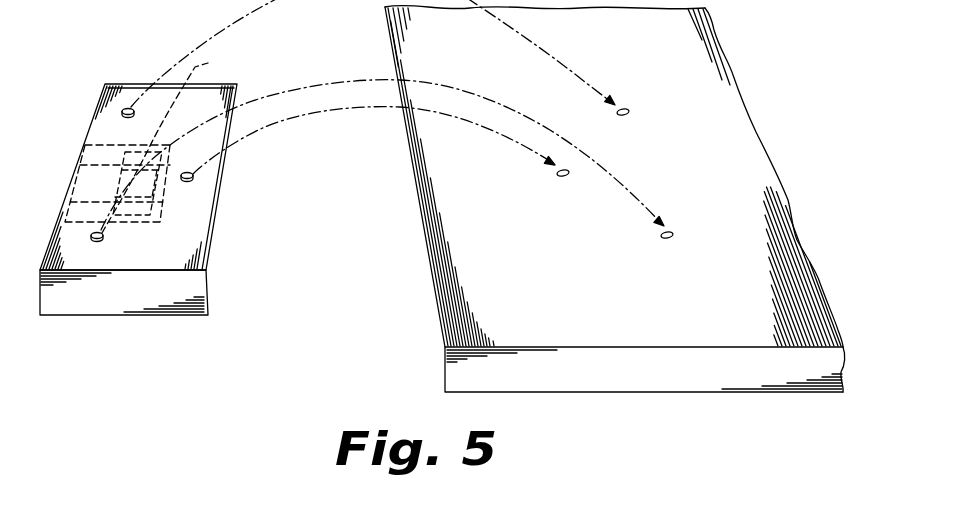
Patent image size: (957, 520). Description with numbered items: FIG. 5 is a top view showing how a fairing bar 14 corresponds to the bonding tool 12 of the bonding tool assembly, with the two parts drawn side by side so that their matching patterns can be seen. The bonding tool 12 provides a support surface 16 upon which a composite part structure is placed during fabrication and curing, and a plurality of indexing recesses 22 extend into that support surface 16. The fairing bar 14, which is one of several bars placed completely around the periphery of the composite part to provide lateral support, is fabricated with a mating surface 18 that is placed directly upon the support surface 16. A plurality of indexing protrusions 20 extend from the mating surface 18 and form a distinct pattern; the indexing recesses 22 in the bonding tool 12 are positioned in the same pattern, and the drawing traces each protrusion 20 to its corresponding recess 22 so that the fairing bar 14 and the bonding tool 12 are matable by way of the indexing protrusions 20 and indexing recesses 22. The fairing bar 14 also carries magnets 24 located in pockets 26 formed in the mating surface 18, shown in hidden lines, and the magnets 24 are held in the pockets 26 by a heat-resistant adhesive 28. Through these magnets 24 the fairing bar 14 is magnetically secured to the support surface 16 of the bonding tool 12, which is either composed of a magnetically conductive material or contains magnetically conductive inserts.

The bonding tool 12 is at (600, 370).
The fairing bar 14 is at (95, 301).
The support surface 16 is at (545, 319).
The mating surface 18 is at (143, 249).
The indexing protrusions 20 is at (129, 107).
The indexing recesses 22 is at (629, 113).
The magnets 24 is at (208, 63).
The pockets 26 is at (107, 143).
The heat-resistant adhesive 28 is at (98, 188).